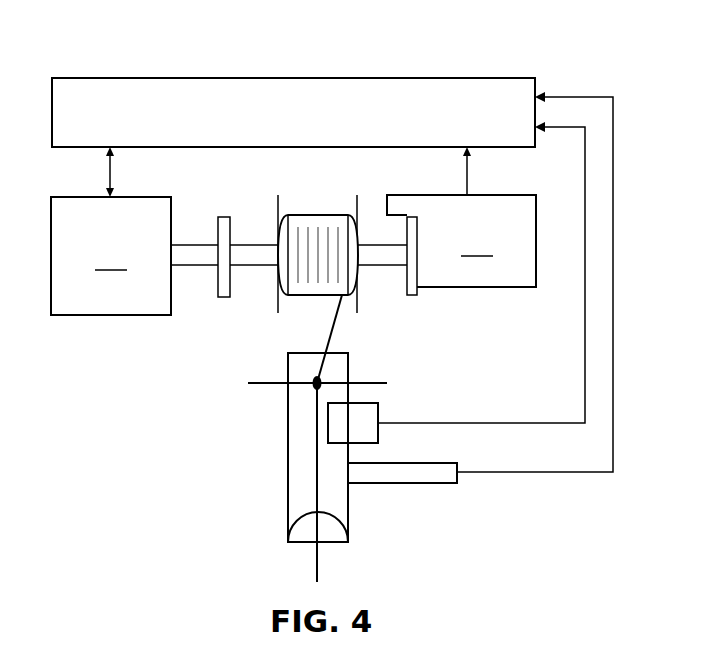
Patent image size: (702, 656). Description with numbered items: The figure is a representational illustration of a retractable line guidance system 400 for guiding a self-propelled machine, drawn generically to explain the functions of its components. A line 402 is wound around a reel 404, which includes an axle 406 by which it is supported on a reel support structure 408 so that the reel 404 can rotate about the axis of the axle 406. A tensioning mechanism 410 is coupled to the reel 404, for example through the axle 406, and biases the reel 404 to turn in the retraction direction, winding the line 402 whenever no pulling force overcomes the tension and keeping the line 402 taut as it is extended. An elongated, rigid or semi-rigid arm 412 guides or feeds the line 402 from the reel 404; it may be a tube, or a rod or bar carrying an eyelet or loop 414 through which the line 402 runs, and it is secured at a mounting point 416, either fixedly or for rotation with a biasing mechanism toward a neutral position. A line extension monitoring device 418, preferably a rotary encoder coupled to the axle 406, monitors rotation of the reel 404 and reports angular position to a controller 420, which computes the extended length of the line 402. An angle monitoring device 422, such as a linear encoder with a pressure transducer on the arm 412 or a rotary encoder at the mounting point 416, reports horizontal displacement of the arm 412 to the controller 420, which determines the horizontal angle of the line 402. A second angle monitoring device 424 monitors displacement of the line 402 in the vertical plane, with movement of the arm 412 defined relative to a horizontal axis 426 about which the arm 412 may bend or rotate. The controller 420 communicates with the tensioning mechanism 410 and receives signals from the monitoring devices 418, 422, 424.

The retractable line guidance system 400 is at (508, 54).
The line 402 is at (320, 560).
The reel 404 is at (278, 208).
The axle 406 is at (377, 268).
The reel support structure 408 is at (225, 297).
The tensioning mechanism 410 is at (111, 256).
The arm 412 is at (288, 463).
The eyelet 414 is at (288, 510).
The mounting point 416 is at (313, 388).
The line extension monitoring device 418 is at (461, 217).
The controller 420 is at (160, 78).
The angle monitoring device 422 is at (402, 483).
The angle monitoring device 424 is at (380, 413).
The horizontal axis 426 is at (263, 383).